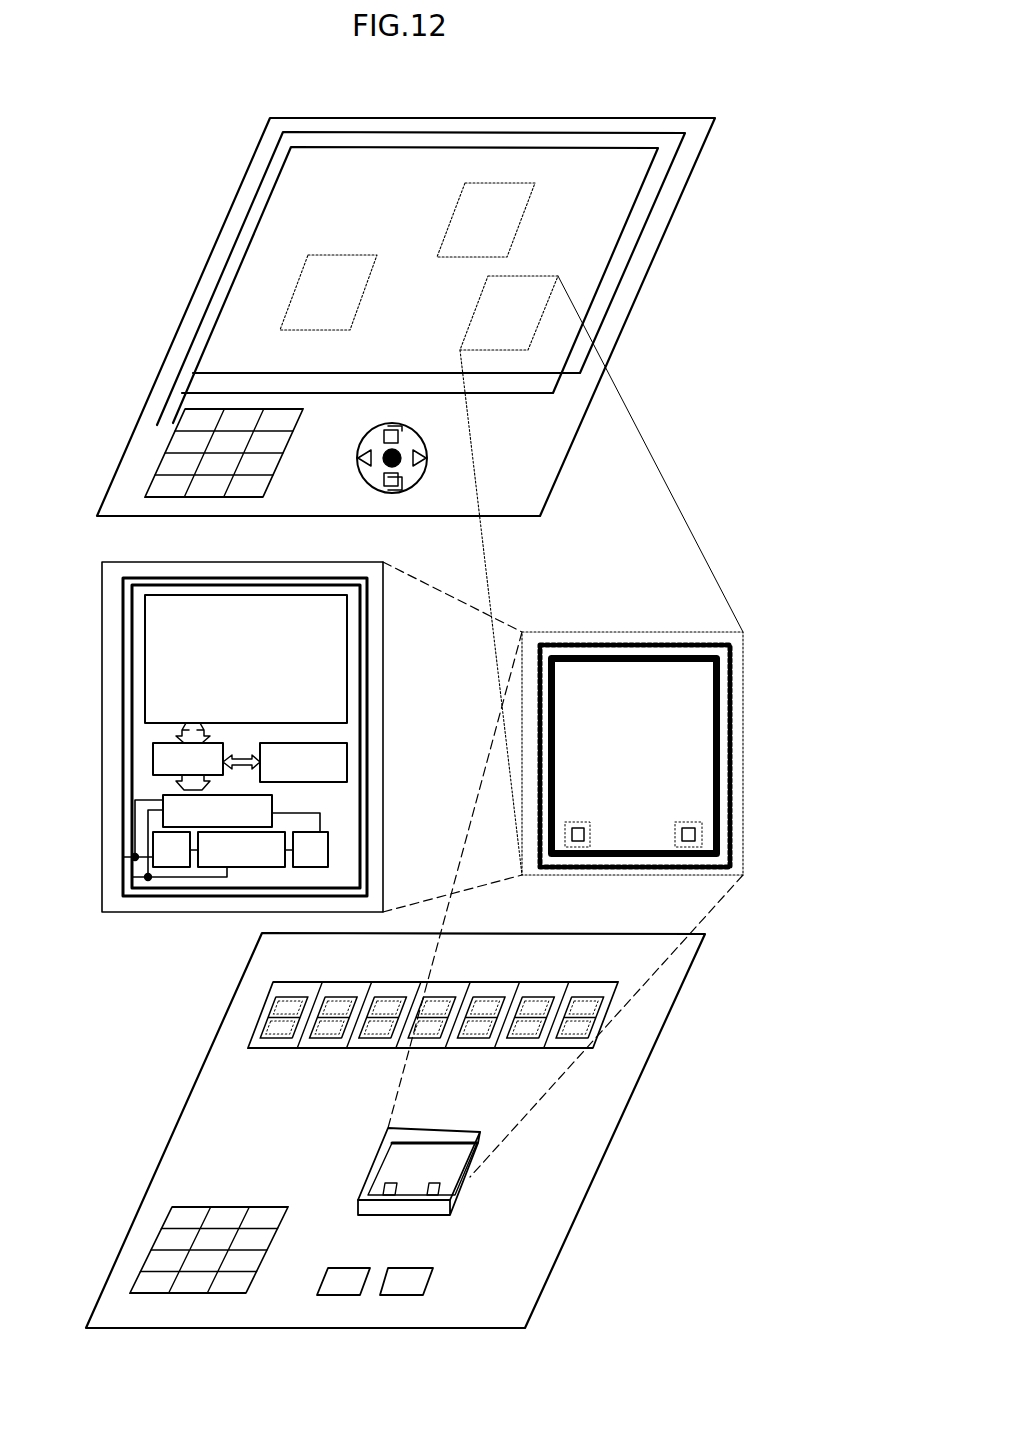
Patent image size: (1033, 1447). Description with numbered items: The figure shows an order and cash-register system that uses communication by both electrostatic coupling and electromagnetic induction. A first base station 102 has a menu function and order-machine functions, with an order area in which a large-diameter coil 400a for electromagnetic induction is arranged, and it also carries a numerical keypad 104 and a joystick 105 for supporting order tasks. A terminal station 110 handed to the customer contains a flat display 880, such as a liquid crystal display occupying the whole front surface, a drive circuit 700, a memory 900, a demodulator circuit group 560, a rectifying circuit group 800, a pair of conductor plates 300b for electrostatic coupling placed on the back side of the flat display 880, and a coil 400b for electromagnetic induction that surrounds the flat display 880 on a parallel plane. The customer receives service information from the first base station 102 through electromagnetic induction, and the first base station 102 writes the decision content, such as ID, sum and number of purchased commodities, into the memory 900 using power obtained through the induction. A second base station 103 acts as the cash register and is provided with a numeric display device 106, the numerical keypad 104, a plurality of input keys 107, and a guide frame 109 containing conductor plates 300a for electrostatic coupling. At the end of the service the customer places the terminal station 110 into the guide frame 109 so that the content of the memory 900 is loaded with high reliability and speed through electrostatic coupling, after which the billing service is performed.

The first base station 102 is at (246, 173).
The large-diameter coil for electromagnetic induction 400a is at (236, 240).
The coil for electromagnetic induction 400b is at (123, 585).
The numerical keypad 104 is at (289, 440).
The joystick 105 is at (428, 463).
The terminal station 110 is at (147, 914).
The flat display 880 is at (145, 655).
The drive circuit 700 is at (153, 762).
The memory 900 is at (347, 762).
The demodulator circuit group 560 is at (272, 800).
The rectifying circuit group 800 is at (240, 867).
The pair of conductor plates for electrostatic coupling 300b is at (328, 847).
The conductor plates for electrostatic coupling 300a is at (580, 835).
The second base station 103 is at (633, 1092).
The numeric display device 106 is at (262, 1010).
The guide frame 109 is at (457, 1207).
The input keys 107 is at (348, 1268).